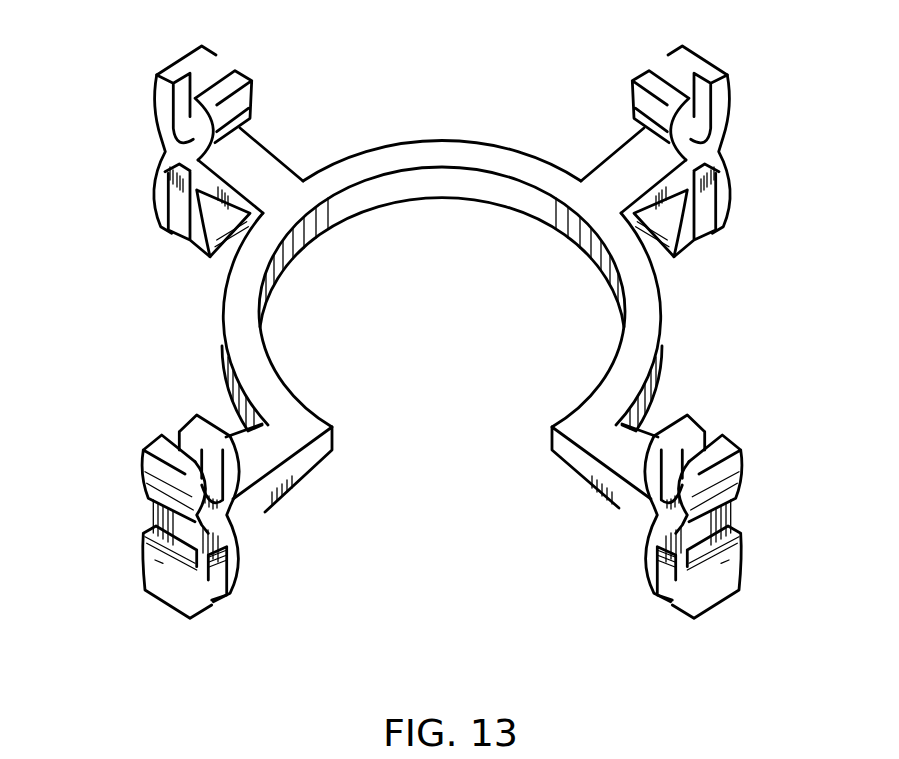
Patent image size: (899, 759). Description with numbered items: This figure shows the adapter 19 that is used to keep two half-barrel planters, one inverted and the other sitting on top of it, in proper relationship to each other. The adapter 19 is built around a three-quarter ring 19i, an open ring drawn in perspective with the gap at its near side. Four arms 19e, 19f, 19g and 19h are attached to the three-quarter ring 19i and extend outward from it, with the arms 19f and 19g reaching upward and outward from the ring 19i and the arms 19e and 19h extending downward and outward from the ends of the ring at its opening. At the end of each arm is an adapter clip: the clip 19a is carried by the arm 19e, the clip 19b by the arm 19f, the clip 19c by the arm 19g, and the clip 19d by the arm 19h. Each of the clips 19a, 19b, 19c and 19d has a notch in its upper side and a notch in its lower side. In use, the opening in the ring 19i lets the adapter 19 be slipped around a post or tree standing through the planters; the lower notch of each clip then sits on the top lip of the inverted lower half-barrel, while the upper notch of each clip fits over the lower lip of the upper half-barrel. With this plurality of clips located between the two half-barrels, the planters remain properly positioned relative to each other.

The adapter 19 is at (461, 44).
The adapter clip 19a is at (145, 452).
The adapter clip 19b is at (157, 225).
The adapter clip 19c is at (730, 180).
The adapter clip 19d is at (740, 472).
The arm 19e is at (262, 517).
The arm 19f is at (273, 155).
The arm 19g is at (627, 142).
The arm 19h is at (582, 484).
The three-quarter ring 19i is at (393, 203).